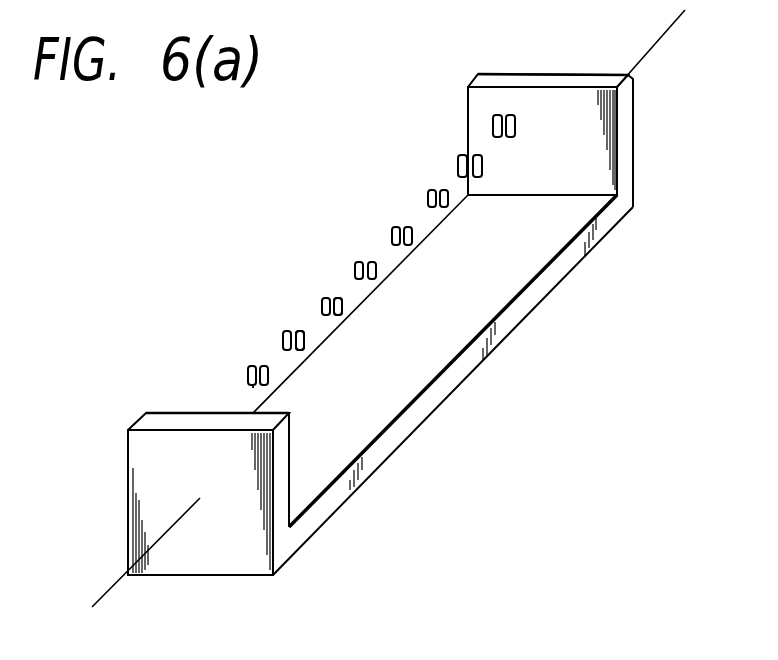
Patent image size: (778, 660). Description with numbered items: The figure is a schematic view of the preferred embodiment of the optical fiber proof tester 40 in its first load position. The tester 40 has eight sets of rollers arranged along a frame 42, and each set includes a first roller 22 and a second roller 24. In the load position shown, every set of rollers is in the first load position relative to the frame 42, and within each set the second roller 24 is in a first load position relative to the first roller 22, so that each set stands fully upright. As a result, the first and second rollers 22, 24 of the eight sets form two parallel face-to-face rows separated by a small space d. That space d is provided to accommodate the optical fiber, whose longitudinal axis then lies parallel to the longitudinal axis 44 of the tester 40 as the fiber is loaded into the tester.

The first roller 22 is at (299, 344).
The second roller 24 is at (339, 304).
The optical fiber proof tester 40 is at (655, 150).
The frame 42 is at (625, 191).
The longitudinal axis of the tester 44 is at (637, 54).
The space d is at (253, 386).